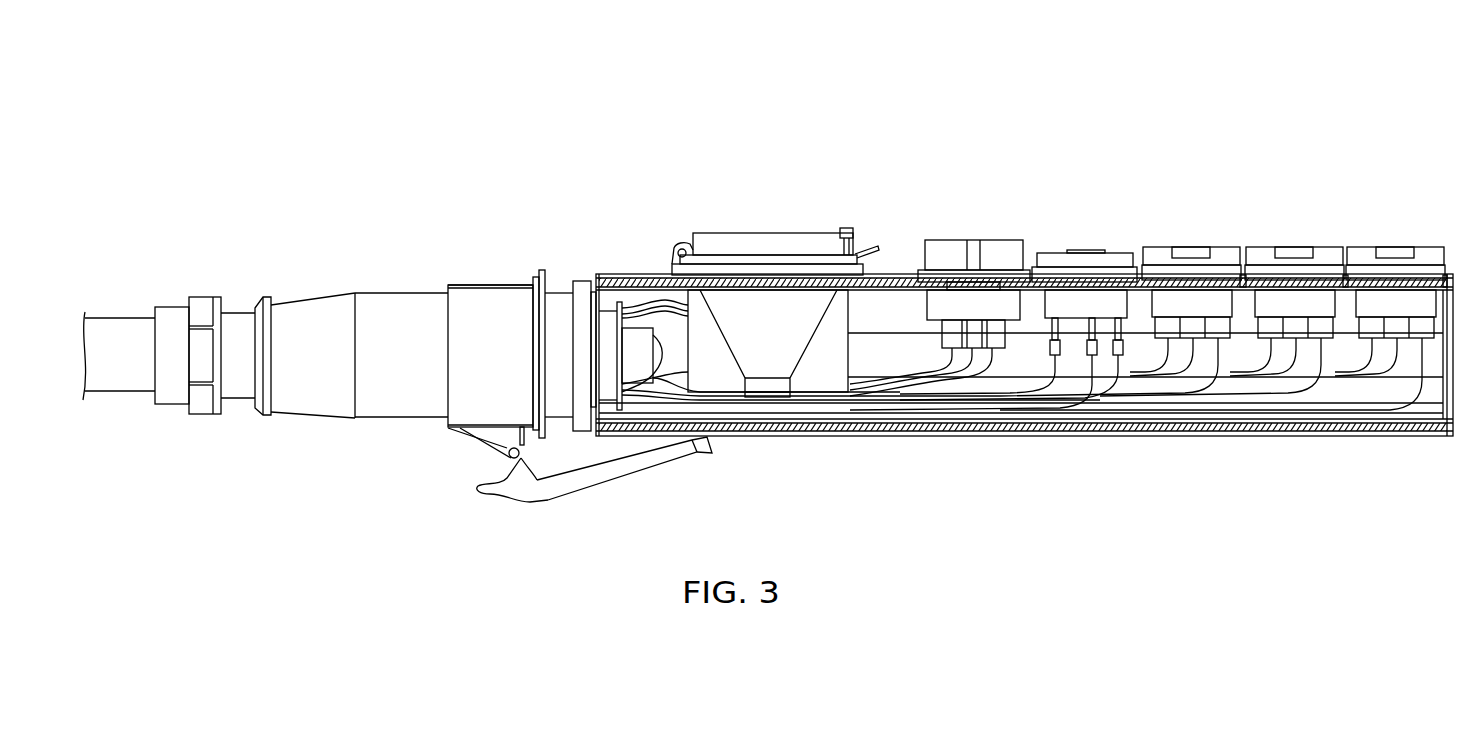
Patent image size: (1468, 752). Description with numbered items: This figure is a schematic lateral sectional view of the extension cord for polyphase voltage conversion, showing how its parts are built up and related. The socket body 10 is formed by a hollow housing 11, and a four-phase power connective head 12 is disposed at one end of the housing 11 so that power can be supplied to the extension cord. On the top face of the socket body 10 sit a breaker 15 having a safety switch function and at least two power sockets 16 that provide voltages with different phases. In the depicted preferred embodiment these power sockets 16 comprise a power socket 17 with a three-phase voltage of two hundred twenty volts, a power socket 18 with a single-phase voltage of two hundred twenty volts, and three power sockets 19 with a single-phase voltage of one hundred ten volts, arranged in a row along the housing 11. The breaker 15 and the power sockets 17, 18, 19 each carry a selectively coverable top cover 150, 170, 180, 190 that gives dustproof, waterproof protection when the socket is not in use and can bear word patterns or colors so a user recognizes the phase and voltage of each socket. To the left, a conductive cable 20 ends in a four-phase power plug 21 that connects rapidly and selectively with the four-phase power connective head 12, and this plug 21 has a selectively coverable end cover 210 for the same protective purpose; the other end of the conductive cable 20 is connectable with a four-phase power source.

The socket body 10 is at (538, 128).
The hollow housing 11 is at (635, 290).
The four-phase power connective head 12 is at (568, 298).
The breaker 15 is at (812, 377).
The power sockets 16 is at (1148, 223).
The power socket with a three-phase voltage of 220 V 17 is at (918, 280).
The power socket with a single-phase voltage of 220 V 18 is at (1118, 282).
The power socket with a single-phase voltage of 110 V 19 is at (1215, 282).
The conductive cable 20 is at (118, 330).
The four-phase power plug 21 is at (413, 300).
The top cover 150 is at (773, 232).
The top cover 170 is at (995, 240).
The top cover 180 is at (1077, 253).
The top cover 190 is at (1183, 250).
The end cover 210 is at (635, 468).